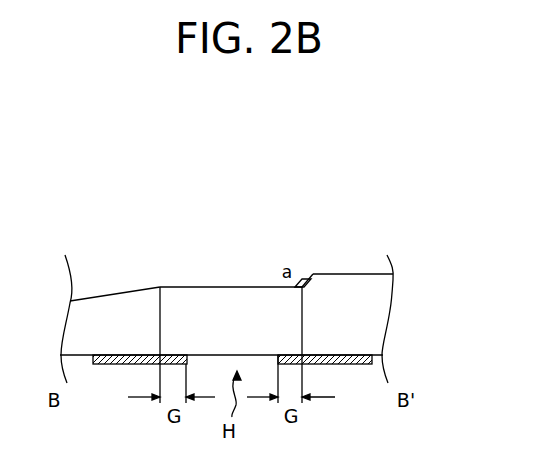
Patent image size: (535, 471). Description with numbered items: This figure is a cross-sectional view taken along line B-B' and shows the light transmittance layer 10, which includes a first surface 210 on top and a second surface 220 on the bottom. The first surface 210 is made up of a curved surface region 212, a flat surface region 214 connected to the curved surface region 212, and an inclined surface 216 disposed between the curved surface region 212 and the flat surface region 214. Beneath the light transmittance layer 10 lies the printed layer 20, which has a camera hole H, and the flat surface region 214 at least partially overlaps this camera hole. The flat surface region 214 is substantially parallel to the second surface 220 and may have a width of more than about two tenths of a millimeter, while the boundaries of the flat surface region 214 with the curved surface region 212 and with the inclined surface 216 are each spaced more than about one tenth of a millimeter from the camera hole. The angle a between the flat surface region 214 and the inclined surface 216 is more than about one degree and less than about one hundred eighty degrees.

The light transmittance layer 10 is at (378, 310).
The printed layer 20 is at (102, 366).
The second surface 220 is at (374, 366).
The first surface 210 is at (108, 209).
The curved surface region 212 is at (130, 290).
The flat surface region 214 is at (232, 287).
The inclined surface 216 is at (313, 276).